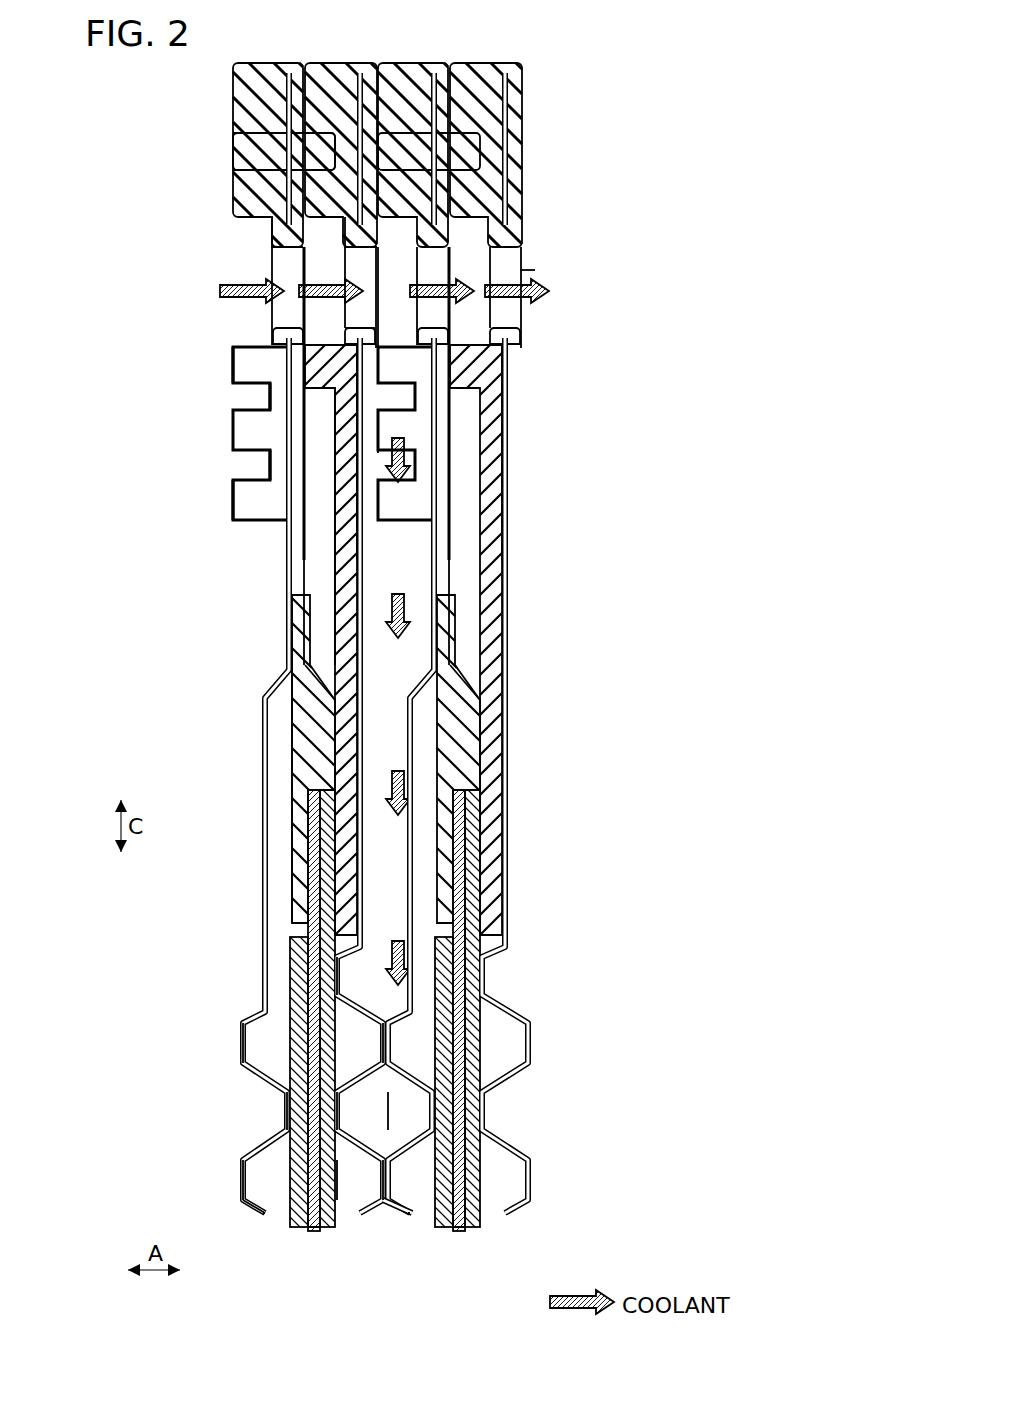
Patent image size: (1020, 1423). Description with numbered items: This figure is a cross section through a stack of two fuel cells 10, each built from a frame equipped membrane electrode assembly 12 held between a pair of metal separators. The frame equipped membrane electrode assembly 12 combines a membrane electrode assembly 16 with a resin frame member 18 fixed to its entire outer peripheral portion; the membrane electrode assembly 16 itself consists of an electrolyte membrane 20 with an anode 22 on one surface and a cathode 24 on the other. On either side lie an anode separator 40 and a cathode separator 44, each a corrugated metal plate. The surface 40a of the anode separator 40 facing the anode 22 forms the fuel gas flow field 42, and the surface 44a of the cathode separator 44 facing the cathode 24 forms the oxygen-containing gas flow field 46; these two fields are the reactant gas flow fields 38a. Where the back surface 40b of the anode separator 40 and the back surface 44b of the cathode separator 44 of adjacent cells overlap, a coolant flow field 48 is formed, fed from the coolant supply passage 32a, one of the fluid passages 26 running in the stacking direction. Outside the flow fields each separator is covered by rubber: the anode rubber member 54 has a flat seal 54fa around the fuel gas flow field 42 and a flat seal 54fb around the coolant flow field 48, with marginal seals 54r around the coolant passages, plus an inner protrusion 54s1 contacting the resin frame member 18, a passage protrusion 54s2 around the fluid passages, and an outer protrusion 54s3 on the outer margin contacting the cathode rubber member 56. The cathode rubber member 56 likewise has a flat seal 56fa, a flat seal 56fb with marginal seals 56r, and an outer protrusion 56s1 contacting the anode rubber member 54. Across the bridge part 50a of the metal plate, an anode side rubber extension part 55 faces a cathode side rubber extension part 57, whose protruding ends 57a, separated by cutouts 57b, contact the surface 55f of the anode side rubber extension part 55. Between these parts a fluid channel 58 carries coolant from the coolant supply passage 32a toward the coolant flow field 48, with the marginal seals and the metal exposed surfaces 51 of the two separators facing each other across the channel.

The fuel cell 10 is at (370, 1290).
The frame equipped membrane electrode assembly 12 is at (314, 1232).
The membrane electrode assembly 16 is at (312, 1010).
The resin frame member 18 is at (284, 740).
The electrolyte membrane 20 is at (313, 1005).
The anode 22 is at (325, 1030).
The cathode 24 is at (300, 975).
The fluid passages 26 is at (538, 268).
The coolant supply passage 32a is at (287, 278).
The reactant gas flow fields 38a is at (142, 1118).
The anode separator 40 is at (330, 60).
The surface of anode separator 40a is at (365, 1030).
The surface of anode separator 40b is at (352, 1000).
The fuel gas flow field 42 is at (353, 1182).
The cathode separator 44 is at (262, 60).
The surface of cathode separator 44a is at (262, 1053).
The surface of cathode separator 44b is at (262, 1078).
The oxygen-containing gas flow field 46 is at (263, 1178).
The coolant flow field 48 is at (263, 1108).
The bridge part 50a is at (366, 546).
The metal exposed surface 51 is at (380, 405).
The anode rubber member 54 is at (382, 121).
The flat seal 54fa is at (340, 555).
The flat seal 54fb is at (378, 228).
The marginal seals 54r is at (356, 338).
The inner protrusion 54s1 is at (317, 648).
The passage protrusion 54s2 is at (300, 174).
The outer protrusion 54s3 is at (300, 149).
The anode side rubber extension part 55 is at (380, 498).
The surface of anode side rubber extension part 55f is at (398, 412).
The cathode rubber member 56 is at (372, 103).
The flat seal 56fa is at (305, 535).
The flat seal 56fb is at (268, 233).
The marginal seals 56r is at (284, 336).
The outer protrusion 56s1 is at (312, 132).
The cathode side rubber extension part 57 is at (212, 352).
The protruding ends 57a is at (240, 368).
The cutouts 57b is at (240, 403).
The fluid channel 58 is at (398, 562).